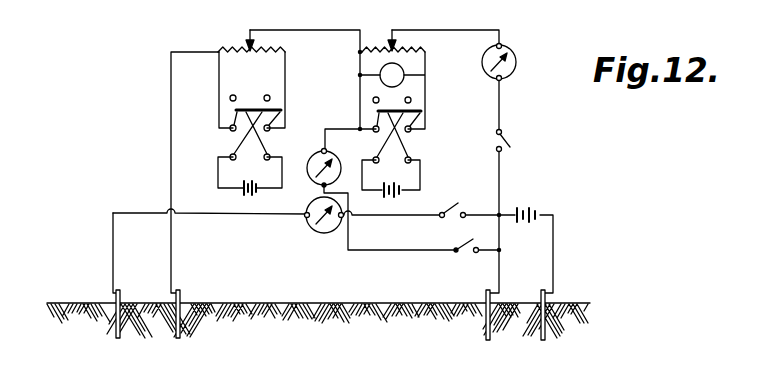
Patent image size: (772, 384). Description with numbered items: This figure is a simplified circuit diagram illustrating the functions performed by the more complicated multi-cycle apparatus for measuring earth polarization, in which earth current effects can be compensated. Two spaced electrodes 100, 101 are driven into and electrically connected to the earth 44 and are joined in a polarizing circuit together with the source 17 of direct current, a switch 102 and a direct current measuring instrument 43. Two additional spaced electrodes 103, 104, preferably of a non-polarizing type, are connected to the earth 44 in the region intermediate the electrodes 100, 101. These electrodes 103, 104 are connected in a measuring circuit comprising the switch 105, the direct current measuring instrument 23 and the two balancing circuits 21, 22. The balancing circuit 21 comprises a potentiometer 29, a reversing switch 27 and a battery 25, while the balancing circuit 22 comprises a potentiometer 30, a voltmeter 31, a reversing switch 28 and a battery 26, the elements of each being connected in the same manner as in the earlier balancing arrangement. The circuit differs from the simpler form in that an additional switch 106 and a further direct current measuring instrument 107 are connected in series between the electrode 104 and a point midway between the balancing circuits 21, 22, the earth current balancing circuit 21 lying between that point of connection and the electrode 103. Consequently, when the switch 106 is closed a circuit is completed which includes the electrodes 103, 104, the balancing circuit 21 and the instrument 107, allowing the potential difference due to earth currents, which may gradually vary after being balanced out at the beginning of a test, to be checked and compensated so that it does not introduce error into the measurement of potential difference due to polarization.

The source of direct current 17 is at (540, 210).
The balancing circuit 21 is at (281, 122).
The balancing circuit 22 is at (421, 130).
The direct current measuring instrument 23 is at (517, 66).
The battery 25 is at (258, 190).
The battery 26 is at (402, 190).
The reversing switch 27 is at (278, 120).
The reversing switch 28 is at (421, 129).
The potentiometer 29 is at (286, 53).
The potentiometer 30 is at (426, 53).
The voltmeter 31 is at (404, 78).
The direct current measuring instrument 43 is at (323, 234).
The earth 44 is at (326, 303).
The electrode 100 is at (123, 298).
The electrode 101 is at (549, 298).
The switch 102 is at (452, 207).
The electrode 103 is at (183, 298).
The electrode 104 is at (493, 298).
The switch 105 is at (509, 146).
The switch 106 is at (469, 251).
The direct current measuring instrument 107 is at (328, 152).